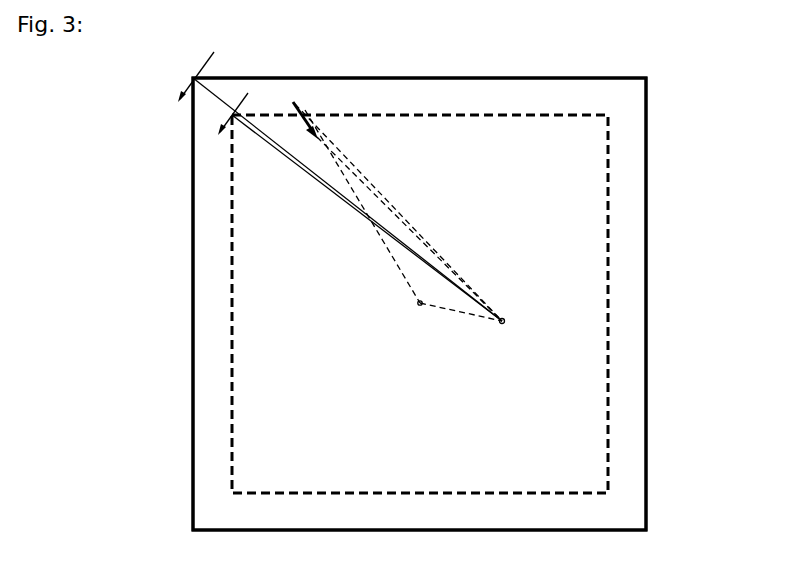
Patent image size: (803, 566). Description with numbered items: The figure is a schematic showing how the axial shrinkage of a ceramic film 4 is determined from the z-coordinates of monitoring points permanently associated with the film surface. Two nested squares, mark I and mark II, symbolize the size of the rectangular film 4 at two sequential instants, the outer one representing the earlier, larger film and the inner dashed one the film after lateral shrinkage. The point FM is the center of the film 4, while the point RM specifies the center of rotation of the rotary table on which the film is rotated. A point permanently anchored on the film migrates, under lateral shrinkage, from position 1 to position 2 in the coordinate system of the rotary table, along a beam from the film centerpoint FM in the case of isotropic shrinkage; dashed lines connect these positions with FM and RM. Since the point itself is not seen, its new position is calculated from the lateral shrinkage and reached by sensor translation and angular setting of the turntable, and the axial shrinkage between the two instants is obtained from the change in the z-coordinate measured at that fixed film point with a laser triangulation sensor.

The position 1 is at (387, 205).
The position 2 is at (397, 215).
The ceramic film 4 is at (552, 188).
The mark I is at (419, 304).
The mark II is at (420, 304).
The film centerpoint FM is at (455, 316).
The center of rotation of the rotary table RM is at (505, 335).